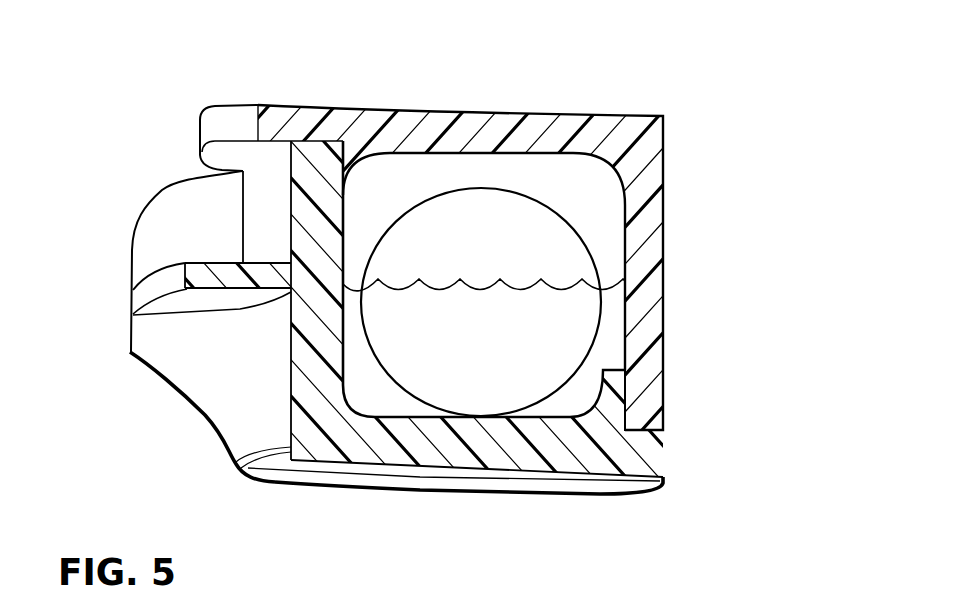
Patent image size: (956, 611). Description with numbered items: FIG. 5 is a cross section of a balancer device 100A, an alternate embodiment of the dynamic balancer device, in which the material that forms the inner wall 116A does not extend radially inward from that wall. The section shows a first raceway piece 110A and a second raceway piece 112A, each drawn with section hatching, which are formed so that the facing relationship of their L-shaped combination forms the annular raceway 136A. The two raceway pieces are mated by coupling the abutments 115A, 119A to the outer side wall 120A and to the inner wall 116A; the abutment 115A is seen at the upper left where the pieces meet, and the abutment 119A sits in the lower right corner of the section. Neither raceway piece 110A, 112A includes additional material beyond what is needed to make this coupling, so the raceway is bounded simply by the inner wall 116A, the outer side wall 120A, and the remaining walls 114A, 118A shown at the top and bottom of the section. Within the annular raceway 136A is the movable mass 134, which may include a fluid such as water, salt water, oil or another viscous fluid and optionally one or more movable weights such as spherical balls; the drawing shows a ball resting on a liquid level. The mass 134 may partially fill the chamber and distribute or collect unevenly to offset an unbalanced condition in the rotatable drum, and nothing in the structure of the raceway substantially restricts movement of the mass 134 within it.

The lubricant storage assembly 100A is at (166, 75).
The first raceway piece 110A is at (640, 110).
The second raceway piece 112A is at (288, 323).
The top wall 114A is at (532, 153).
The abutment 115A is at (303, 141).
The inner wall 116A is at (625, 237).
The bottom wall 118A is at (430, 417).
The abutment 119A is at (617, 377).
The outer side wall 120A is at (340, 237).
The movable mass 134 is at (493, 205).
The cavity 136A is at (374, 175).